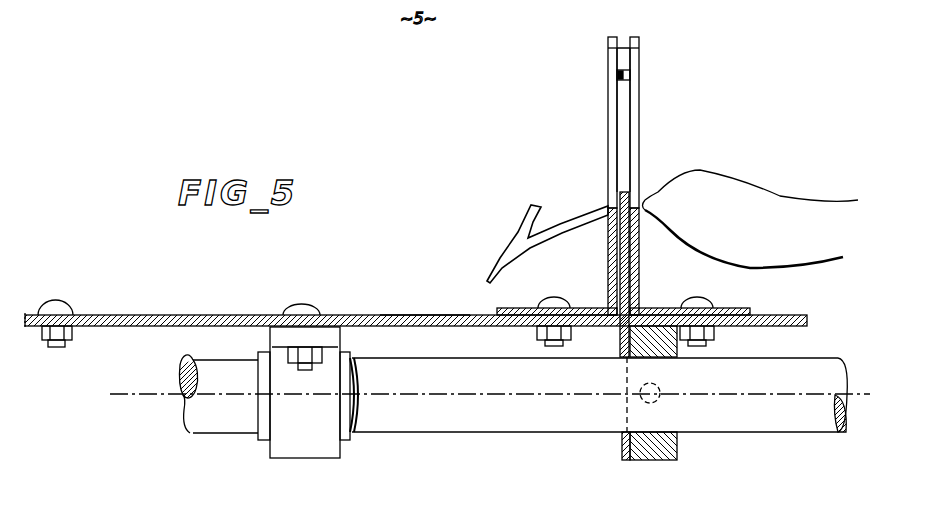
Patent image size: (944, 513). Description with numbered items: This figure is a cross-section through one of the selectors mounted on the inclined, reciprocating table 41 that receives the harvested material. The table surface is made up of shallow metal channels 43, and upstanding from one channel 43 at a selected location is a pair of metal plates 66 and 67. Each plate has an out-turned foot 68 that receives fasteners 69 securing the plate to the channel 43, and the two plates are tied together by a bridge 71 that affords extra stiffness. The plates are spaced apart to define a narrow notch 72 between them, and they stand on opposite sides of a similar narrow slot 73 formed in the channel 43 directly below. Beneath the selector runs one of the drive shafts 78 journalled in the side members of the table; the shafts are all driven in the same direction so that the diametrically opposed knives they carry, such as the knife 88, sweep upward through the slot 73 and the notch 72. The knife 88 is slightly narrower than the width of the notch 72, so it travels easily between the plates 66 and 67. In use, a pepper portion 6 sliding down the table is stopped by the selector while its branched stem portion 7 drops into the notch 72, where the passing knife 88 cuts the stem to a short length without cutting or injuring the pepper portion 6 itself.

The pepper portion 6 is at (744, 195).
The stem portion 7 is at (514, 222).
The table 41 is at (231, 288).
The channel 43 is at (424, 315).
The metal plate 66 is at (640, 126).
The metal plate 67 is at (608, 122).
The out-turned foot 68 is at (107, 315).
The fastener 69 is at (55, 304).
The bridge 71 is at (628, 70).
The notch 72 is at (624, 43).
The slot 73 is at (618, 326).
The drive shaft 78 is at (436, 422).
The knife 88 is at (620, 234).